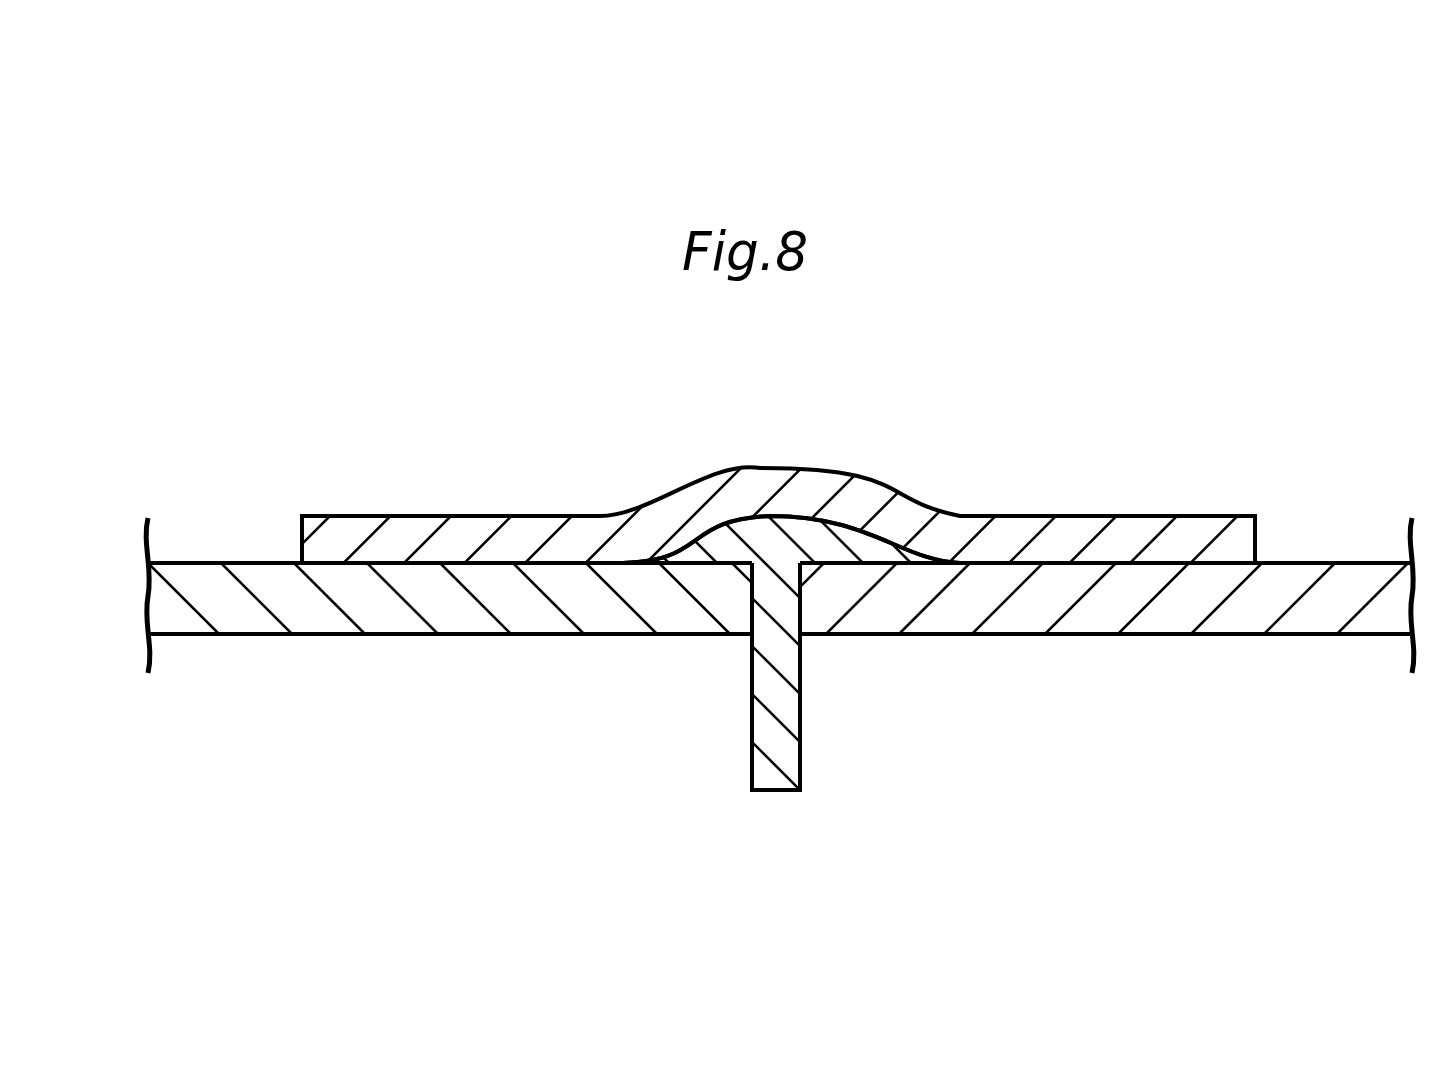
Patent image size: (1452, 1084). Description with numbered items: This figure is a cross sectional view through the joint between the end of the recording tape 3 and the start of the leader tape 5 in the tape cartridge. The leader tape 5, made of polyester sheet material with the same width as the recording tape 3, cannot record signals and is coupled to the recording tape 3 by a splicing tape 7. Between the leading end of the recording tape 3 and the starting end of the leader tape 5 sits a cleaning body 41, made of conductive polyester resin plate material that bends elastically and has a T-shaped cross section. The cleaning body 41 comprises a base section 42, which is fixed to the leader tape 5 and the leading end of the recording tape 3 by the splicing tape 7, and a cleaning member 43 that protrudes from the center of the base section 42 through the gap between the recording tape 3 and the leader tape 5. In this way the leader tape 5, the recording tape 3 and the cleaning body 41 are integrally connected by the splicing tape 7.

The recording tape 3 is at (247, 620).
The leader tape 5 is at (1160, 622).
The splicing tape 7 is at (1071, 516).
The cleaning body 41 is at (723, 701).
The base section 42 is at (810, 533).
The cleaning member 43 is at (790, 760).